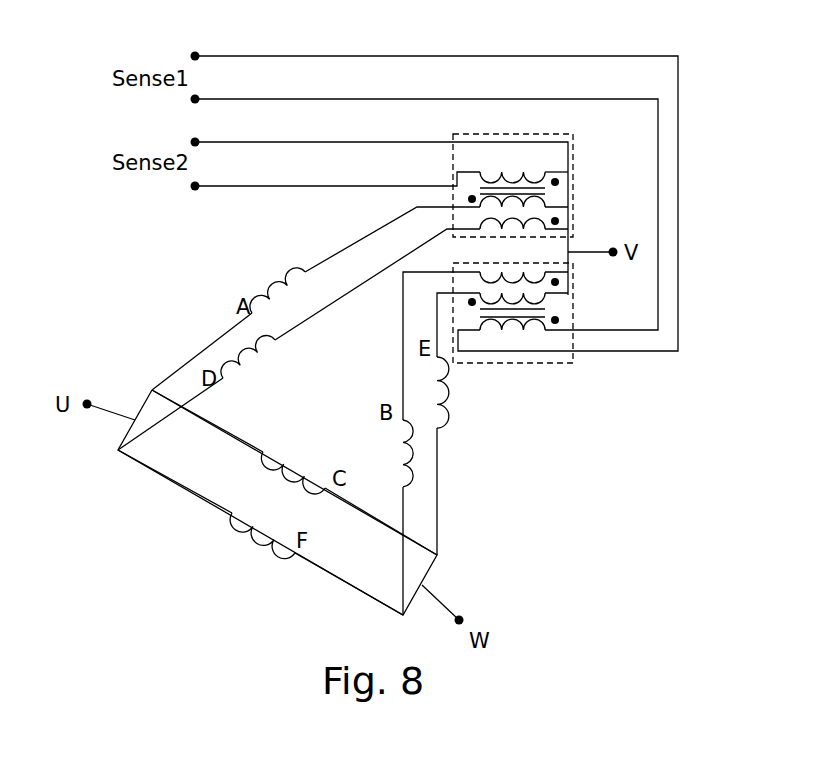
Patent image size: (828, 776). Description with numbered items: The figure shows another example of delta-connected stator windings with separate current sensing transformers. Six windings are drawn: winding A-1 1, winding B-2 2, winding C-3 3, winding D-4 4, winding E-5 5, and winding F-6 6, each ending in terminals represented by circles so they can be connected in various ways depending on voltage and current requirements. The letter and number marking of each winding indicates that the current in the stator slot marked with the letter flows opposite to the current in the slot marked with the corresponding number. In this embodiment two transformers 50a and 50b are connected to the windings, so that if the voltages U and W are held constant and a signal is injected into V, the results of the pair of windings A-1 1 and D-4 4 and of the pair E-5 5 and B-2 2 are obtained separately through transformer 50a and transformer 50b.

The winding A- 1 is at (316, 298).
The winding B- 2 is at (431, 443).
The winding C- 3 is at (294, 472).
The winding D- 4 is at (299, 339).
The winding E- 5 is at (449, 424).
The winding F- 6 is at (260, 532).
The current sensing transformer 50a is at (638, 173).
The current sensing transformer 50b is at (638, 302).